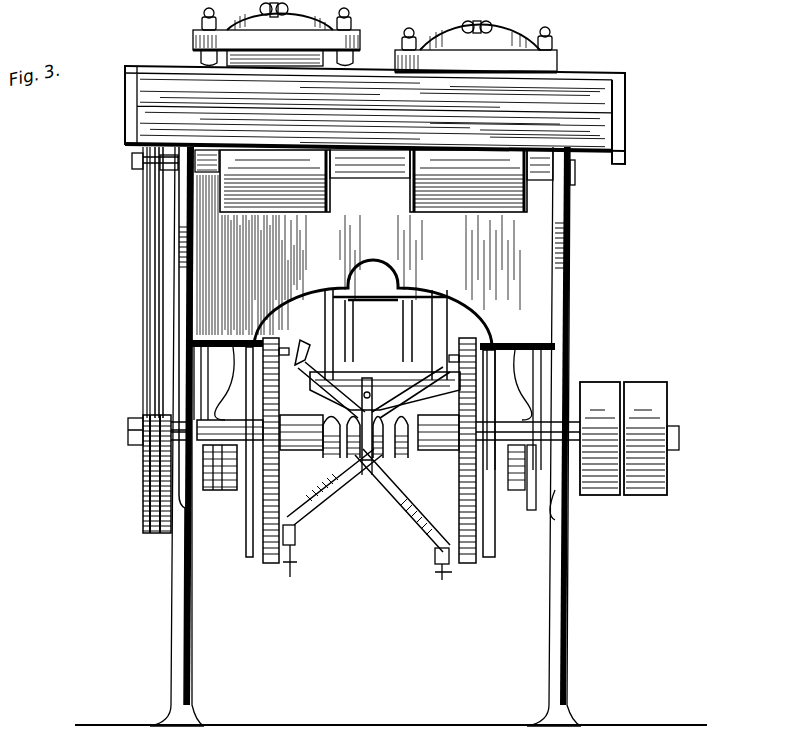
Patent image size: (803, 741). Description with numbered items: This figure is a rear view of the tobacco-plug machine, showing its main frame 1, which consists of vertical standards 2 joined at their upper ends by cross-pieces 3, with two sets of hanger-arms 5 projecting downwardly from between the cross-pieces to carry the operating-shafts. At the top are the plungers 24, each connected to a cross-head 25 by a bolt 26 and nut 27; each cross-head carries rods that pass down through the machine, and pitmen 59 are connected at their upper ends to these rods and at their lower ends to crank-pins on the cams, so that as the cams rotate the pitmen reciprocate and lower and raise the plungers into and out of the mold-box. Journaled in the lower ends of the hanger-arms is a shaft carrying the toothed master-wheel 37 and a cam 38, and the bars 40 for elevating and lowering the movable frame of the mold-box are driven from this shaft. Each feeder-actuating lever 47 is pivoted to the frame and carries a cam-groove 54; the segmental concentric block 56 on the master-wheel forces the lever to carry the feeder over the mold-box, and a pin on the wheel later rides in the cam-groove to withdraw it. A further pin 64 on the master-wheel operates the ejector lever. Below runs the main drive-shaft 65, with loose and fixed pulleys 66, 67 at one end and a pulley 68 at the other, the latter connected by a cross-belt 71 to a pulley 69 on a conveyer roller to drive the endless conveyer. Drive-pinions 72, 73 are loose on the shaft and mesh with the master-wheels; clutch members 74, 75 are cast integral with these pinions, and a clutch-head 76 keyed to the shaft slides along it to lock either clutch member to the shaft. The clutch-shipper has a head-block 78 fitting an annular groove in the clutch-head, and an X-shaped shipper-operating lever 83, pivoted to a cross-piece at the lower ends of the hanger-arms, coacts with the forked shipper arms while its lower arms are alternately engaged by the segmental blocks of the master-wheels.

The main frame 1 is at (176, 300).
The vertical standards 2 is at (551, 593).
The cross-pieces 3 is at (375, 200).
The hanger-arms 5 is at (250, 560).
The plungers 24 is at (375, 36).
The cross-heads 25 is at (277, 34).
The bolt 26 is at (480, 44).
The nut 27 is at (477, 33).
The master-wheel 37 is at (262, 512).
The cam 38 is at (160, 500).
The bars 40 is at (262, 330).
The lever 47 is at (296, 528).
The cam-groove 54 is at (296, 530).
The segmental concentric block 56 is at (490, 360).
The pitmen 59 is at (270, 370).
The pin 64 is at (369, 440).
The main drive-shaft 65 is at (679, 438).
The loose pulley 66 is at (600, 438).
The fixed pulley 67 is at (645, 438).
The pulley 68 is at (145, 478).
The pulley 69 is at (143, 186).
The cross-belt 71 is at (160, 264).
The drive-pinion 72 is at (250, 470).
The drive-pinion 73 is at (505, 480).
The clutch member 74 is at (320, 448).
The clutch member 75 is at (440, 450).
The clutch-head 76 is at (378, 462).
The head-block 78 is at (368, 380).
The shipper-operating lever 83 is at (366, 462).